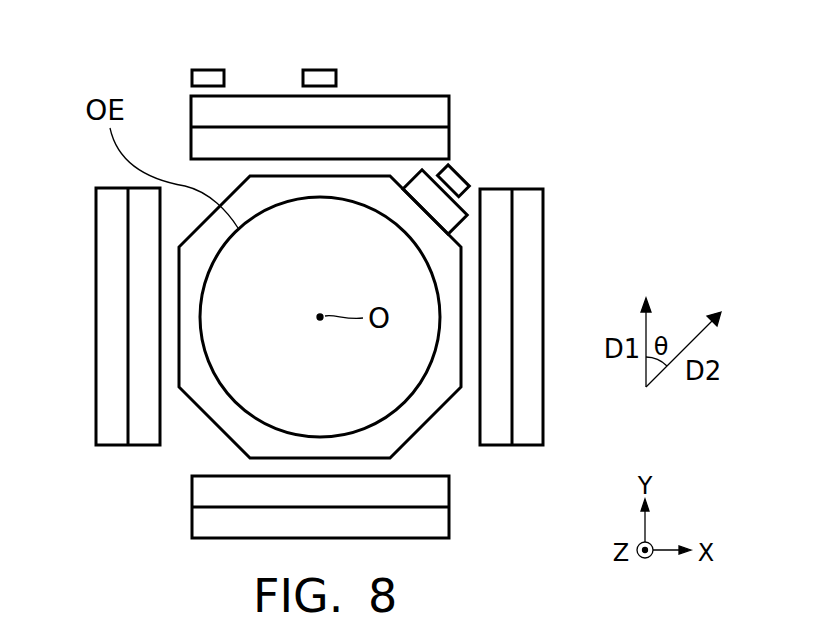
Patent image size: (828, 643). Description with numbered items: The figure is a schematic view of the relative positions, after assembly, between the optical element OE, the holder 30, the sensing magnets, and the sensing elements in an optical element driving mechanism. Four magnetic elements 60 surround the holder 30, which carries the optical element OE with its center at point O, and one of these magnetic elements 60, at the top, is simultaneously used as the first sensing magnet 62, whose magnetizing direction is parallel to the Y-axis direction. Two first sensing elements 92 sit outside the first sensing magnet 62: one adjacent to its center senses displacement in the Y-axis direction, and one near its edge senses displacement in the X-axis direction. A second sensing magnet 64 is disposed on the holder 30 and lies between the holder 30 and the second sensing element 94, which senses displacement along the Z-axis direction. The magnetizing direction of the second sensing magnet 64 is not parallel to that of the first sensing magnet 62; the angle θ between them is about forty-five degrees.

The holder 30 is at (425, 423).
The magnetic element 60 is at (319, 318).
The first sensing magnet 62 is at (452, 110).
The second sensing magnet 64 is at (440, 204).
The first sensing element 92 is at (207, 70).
The second sensing element 94 is at (458, 182).